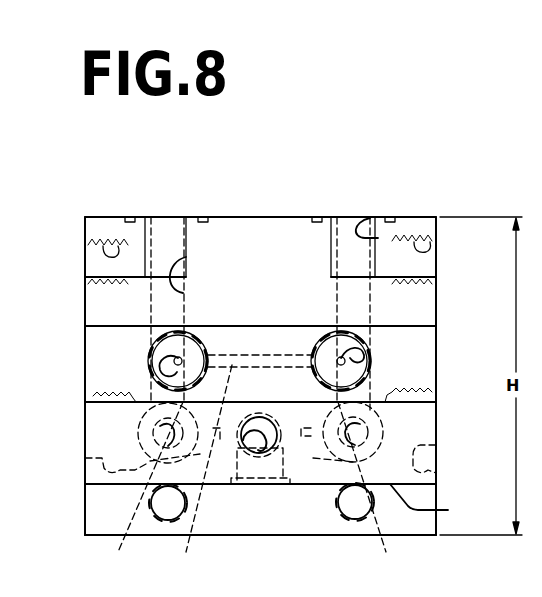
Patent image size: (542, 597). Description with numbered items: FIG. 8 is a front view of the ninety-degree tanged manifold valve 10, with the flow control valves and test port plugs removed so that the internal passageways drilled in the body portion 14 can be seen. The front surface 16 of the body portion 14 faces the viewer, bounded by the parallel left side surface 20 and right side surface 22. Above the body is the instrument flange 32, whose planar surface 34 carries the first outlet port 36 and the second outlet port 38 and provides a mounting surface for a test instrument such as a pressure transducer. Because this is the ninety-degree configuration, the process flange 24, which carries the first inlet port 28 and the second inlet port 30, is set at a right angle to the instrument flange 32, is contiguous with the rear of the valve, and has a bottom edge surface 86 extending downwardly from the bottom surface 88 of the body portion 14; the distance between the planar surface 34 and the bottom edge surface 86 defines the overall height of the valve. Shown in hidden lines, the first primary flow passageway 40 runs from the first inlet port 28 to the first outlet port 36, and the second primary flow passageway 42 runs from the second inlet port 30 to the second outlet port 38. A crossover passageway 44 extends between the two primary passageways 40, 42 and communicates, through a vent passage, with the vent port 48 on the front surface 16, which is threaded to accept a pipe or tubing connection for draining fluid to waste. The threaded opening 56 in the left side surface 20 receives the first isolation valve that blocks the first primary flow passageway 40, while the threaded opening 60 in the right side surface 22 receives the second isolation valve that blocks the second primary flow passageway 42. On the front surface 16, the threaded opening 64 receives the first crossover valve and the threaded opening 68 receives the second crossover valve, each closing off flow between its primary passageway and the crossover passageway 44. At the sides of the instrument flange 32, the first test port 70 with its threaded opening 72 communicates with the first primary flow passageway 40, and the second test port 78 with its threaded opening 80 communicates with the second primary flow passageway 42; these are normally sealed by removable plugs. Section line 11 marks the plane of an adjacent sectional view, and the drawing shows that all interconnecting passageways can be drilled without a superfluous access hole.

The manifold valve 10 is at (281, 384).
The section line 11- 11 is at (267, 340).
The body portion 14 is at (128, 378).
The front surface 16 is at (281, 305).
The left side surface 20 is at (85, 297).
The right side surface 22 is at (436, 293).
The process flange 24 is at (260, 503).
The first inlet port 28 is at (152, 485).
The second inlet port 30 is at (352, 484).
The instrument flange 32 is at (300, 217).
The planar surface 34 is at (410, 217).
The first outlet port 36 is at (152, 222).
The second outlet port 38 is at (360, 212).
The first primary flow passageway 40 is at (188, 226).
The second primary flow passageway 42 is at (422, 378).
The crossover passageway 44 is at (201, 467).
The vent port 48 is at (263, 447).
The threaded opening 56 is at (96, 462).
The threaded opening 60 is at (430, 446).
The threaded opening 64 is at (150, 361).
The threaded opening 68 is at (352, 353).
The first test port 70 is at (80, 258).
The threaded opening 72 is at (88, 243).
The second test port 78 is at (442, 258).
The threaded opening 80 is at (440, 230).
The bottom edge surface 86 is at (335, 535).
The bottom surface 88 is at (430, 501).